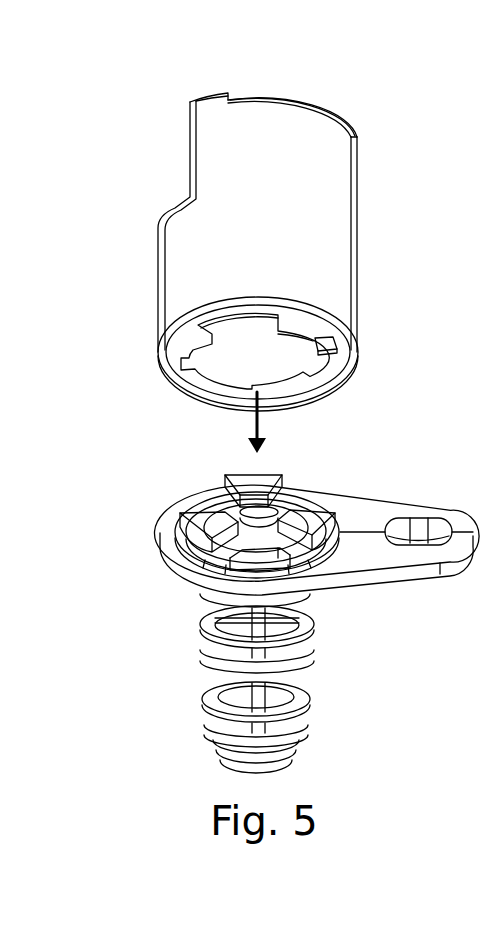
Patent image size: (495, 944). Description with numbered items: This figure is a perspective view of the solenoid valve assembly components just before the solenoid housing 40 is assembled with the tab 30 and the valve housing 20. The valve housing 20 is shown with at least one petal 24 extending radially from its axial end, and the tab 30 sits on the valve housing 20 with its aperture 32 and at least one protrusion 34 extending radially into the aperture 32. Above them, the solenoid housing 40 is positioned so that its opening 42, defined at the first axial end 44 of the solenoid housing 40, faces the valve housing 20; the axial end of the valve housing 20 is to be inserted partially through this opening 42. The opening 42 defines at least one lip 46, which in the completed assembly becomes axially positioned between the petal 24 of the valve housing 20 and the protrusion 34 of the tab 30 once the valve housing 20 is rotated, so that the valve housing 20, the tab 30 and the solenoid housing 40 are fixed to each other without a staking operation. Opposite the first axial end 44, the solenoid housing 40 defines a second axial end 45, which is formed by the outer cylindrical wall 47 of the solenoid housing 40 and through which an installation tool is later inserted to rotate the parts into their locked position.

The valve housing 20 is at (320, 707).
The petal 24 is at (265, 485).
The tab 30 is at (371, 488).
The aperture 32 is at (340, 548).
The protrusion 34 is at (295, 562).
The solenoid housing 40 is at (364, 224).
The opening 42 is at (335, 368).
The first axial end 44 is at (157, 352).
The second axial end 45 is at (348, 133).
The lip 46 is at (318, 337).
The outer cylindrical wall 47 is at (348, 173).